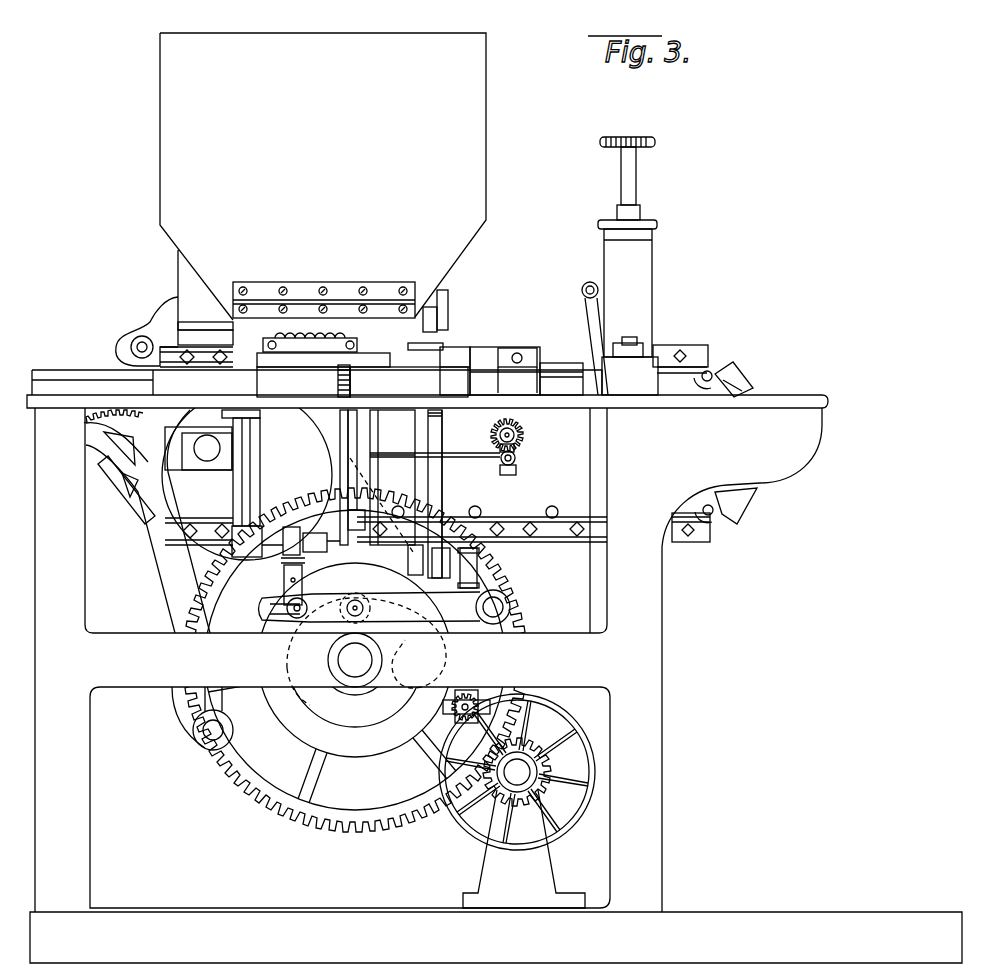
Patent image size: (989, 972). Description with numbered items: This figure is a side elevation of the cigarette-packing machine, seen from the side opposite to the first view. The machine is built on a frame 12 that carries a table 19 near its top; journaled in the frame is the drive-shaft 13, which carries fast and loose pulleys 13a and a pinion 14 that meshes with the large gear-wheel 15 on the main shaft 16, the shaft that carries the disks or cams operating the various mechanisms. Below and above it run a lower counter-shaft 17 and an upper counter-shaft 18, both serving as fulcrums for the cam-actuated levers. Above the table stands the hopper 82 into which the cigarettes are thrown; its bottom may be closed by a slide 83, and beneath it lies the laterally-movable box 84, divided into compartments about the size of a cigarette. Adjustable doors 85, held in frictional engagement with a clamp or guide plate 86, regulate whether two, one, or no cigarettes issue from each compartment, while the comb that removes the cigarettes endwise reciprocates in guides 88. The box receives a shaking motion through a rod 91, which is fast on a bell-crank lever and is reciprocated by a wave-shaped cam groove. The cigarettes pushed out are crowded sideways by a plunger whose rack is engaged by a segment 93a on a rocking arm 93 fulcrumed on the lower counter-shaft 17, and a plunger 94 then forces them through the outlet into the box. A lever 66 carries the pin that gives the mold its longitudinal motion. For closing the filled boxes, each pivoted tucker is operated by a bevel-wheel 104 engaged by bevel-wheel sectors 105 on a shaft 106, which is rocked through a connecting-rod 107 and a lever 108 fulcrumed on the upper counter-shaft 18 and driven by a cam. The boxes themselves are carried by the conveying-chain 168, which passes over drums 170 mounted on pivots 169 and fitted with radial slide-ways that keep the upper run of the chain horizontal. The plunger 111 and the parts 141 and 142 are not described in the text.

The frame 12 is at (494, 666).
The drive-shaft 13 is at (519, 782).
The fast and loose pulleys 13a is at (572, 826).
The pinion 14 is at (468, 814).
The gear-wheel 15 is at (395, 822).
The main shaft 16 is at (366, 581).
The lower counter-shaft 17 is at (212, 736).
The upper counter-shaft 18 is at (512, 607).
The table 19 is at (592, 412).
The lever 66 is at (450, 318).
The hopper 82 is at (323, 181).
The slide 83 is at (205, 335).
The laterally-movable box 84 is at (380, 363).
The adjustable doors 85 is at (275, 336).
The clamp or guide plate 86 is at (345, 353).
The guides 88 is at (289, 358).
The rod 91 is at (364, 440).
The rocking arm 93 is at (170, 594).
The segment 93a is at (95, 424).
The plunger 94 is at (448, 357).
The bevel-wheel 104 is at (521, 417).
The bevel-wheel sectors 105 is at (527, 441).
The shaft 106 is at (498, 434).
The connecting-rod 107 is at (489, 464).
The lever 108 is at (378, 490).
The plunger 111 is at (628, 266).
The rack rail 141 is at (180, 509).
The gear 142 is at (247, 475).
The conveying-chain 168 is at (128, 496).
The pivots 169 is at (212, 452).
The drums 170 is at (709, 542).